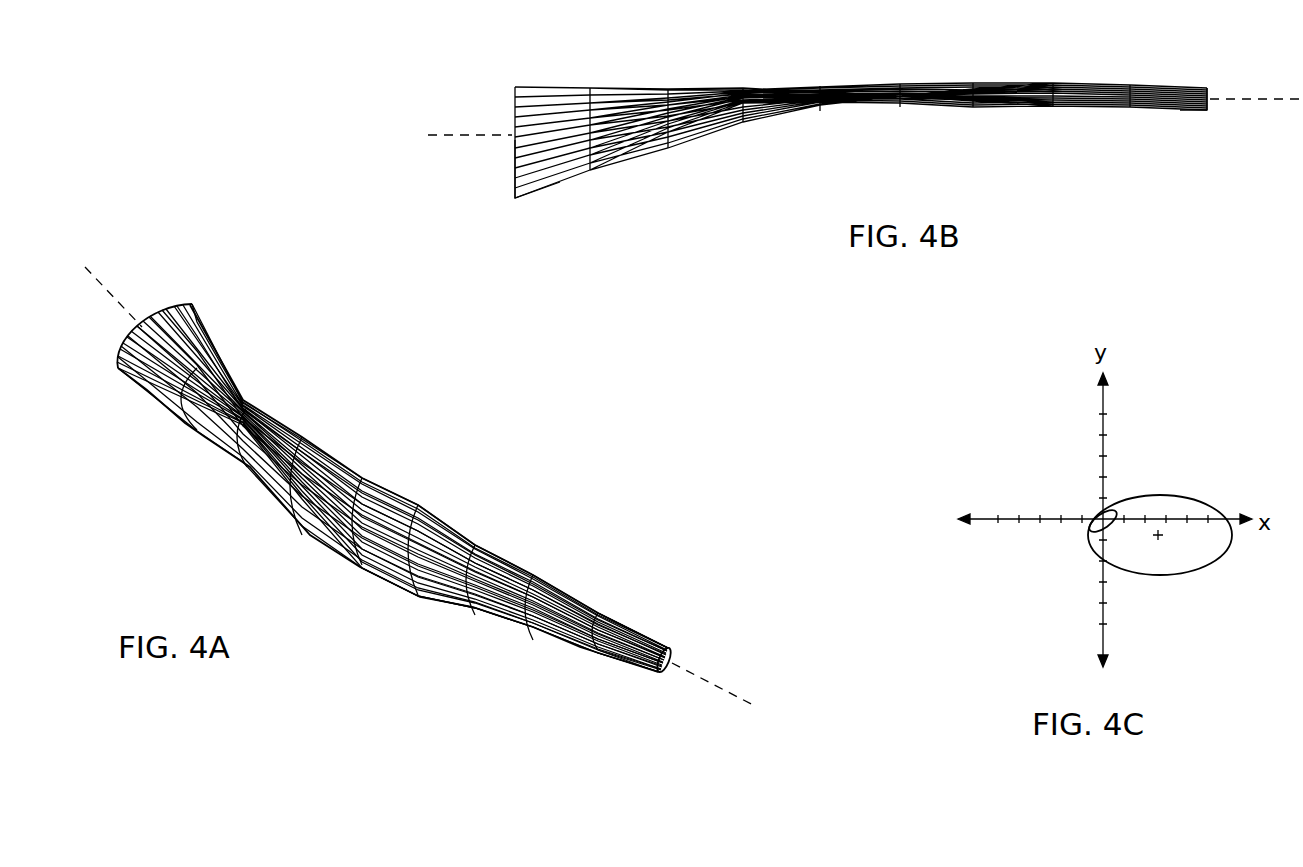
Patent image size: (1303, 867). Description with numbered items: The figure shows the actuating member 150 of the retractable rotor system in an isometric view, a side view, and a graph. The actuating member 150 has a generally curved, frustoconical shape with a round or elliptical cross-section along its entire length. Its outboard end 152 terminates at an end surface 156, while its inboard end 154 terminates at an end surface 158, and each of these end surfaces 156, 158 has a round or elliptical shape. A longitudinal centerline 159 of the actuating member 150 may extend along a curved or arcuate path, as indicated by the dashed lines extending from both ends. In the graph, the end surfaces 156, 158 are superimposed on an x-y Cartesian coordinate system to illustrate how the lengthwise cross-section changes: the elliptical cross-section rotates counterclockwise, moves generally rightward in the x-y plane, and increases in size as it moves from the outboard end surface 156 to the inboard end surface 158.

In FIG. 4B, the actuating member 150 is at (849, 70).
In FIG. 4A, the actuating member 150 is at (441, 491).
In FIG. 4B, the outboard end 152 is at (1206, 74).
In FIG. 4A, the outboard end 152 is at (679, 636).
In FIG. 4B, the inboard end 154 is at (515, 74).
In FIG. 4A, the inboard end 154 is at (206, 294).
In FIG. 4B, the end surface 156 is at (1208, 106).
In FIG. 4A, the end surface 156 is at (663, 670).
In FIG. 4C, the end surface 156 is at (1095, 511).
In FIG. 4B, the end surface 158 is at (513, 162).
In FIG. 4C, the end surface 158 is at (1158, 496).
In FIG. 4B, the longitudinal centerline 159 is at (1275, 94).
In FIG. 4A, the longitudinal centerline 159 is at (101, 294).
In FIG. 4C, the longitudinal centerline 159 is at (1092, 546).